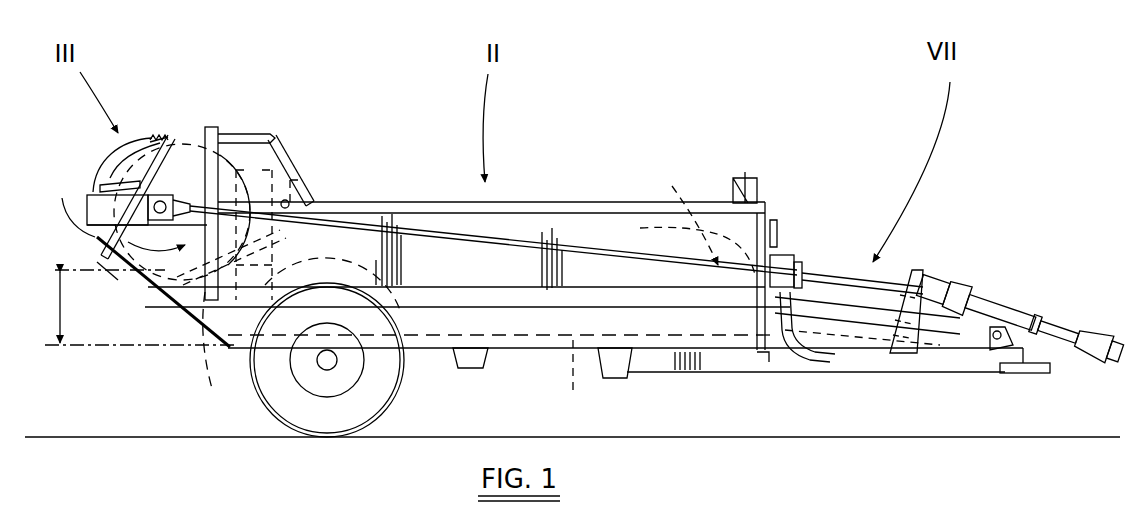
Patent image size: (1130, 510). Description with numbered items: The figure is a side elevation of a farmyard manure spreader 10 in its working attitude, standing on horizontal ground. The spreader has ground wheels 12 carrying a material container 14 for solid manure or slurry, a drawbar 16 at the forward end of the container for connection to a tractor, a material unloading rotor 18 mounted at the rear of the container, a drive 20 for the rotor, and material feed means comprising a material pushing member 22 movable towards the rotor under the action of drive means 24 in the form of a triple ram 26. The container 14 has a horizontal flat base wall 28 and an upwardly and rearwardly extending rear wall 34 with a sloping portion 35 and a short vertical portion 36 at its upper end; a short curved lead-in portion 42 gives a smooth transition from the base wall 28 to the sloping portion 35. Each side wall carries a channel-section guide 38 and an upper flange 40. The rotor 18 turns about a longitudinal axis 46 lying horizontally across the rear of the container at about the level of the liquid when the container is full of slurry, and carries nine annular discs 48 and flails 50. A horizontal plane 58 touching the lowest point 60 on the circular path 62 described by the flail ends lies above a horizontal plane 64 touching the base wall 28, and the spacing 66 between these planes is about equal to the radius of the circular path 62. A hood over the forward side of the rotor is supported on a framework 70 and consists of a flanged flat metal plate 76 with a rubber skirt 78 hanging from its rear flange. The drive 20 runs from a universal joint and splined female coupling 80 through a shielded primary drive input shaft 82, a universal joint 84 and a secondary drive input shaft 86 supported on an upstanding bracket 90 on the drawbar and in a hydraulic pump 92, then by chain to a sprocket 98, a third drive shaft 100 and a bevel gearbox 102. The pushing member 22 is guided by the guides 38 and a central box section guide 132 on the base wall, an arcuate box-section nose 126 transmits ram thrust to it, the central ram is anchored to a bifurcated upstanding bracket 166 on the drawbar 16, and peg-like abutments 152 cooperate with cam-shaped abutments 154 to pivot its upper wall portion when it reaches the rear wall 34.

The farmyard manure spreader 10 is at (810, 125).
The ground wheels 12 is at (395, 390).
The material container 14 is at (577, 215).
The drawbar 16 is at (893, 365).
The material unloading rotor 18 is at (163, 130).
The drive 20 is at (797, 256).
The material pushing member 22 is at (735, 175).
The drive means 24 is at (977, 306).
The triple ram 26 is at (843, 320).
The base wall 28 is at (512, 348).
The rear wall 34 is at (118, 268).
The sloping portion 35 is at (137, 278).
The vertical portion 36 is at (87, 227).
The guide 38 is at (428, 290).
The flange 40 is at (527, 202).
The curved lead-in portion 42 is at (301, 339).
The longitudinal axis 46 is at (240, 133).
The annular discs 48 is at (162, 185).
The flails 50 is at (128, 143).
The horizontal plane 58 is at (60, 268).
The lowest point 60 is at (163, 300).
The circular path 62 is at (128, 143).
The horizontal plane 64 is at (52, 350).
The spacing 66 is at (50, 347).
The framework 70 is at (268, 134).
The flanged flat metal plate 76 is at (277, 136).
The rubber skirt 78 is at (300, 178).
The universal joint and splined female coupling 80 is at (1112, 348).
The primary drive input shaft 82 is at (1036, 318).
The universal joint 84 is at (945, 280).
The secondary drive input shaft 86 is at (895, 282).
The upstanding bracket 90 is at (910, 307).
The hydraulic pump 92 is at (798, 255).
The sprocket 98 is at (802, 268).
The third drive shaft 100 is at (613, 254).
The bevel gearbox 102 is at (87, 205).
The arcuate box-section nose 126 is at (692, 221).
The box section guide 132 is at (808, 362).
The peg-like abutments 152 is at (310, 188).
The cam-shaped abutments 154 is at (300, 212).
The bifurcated upstanding bracket 166 is at (1040, 352).